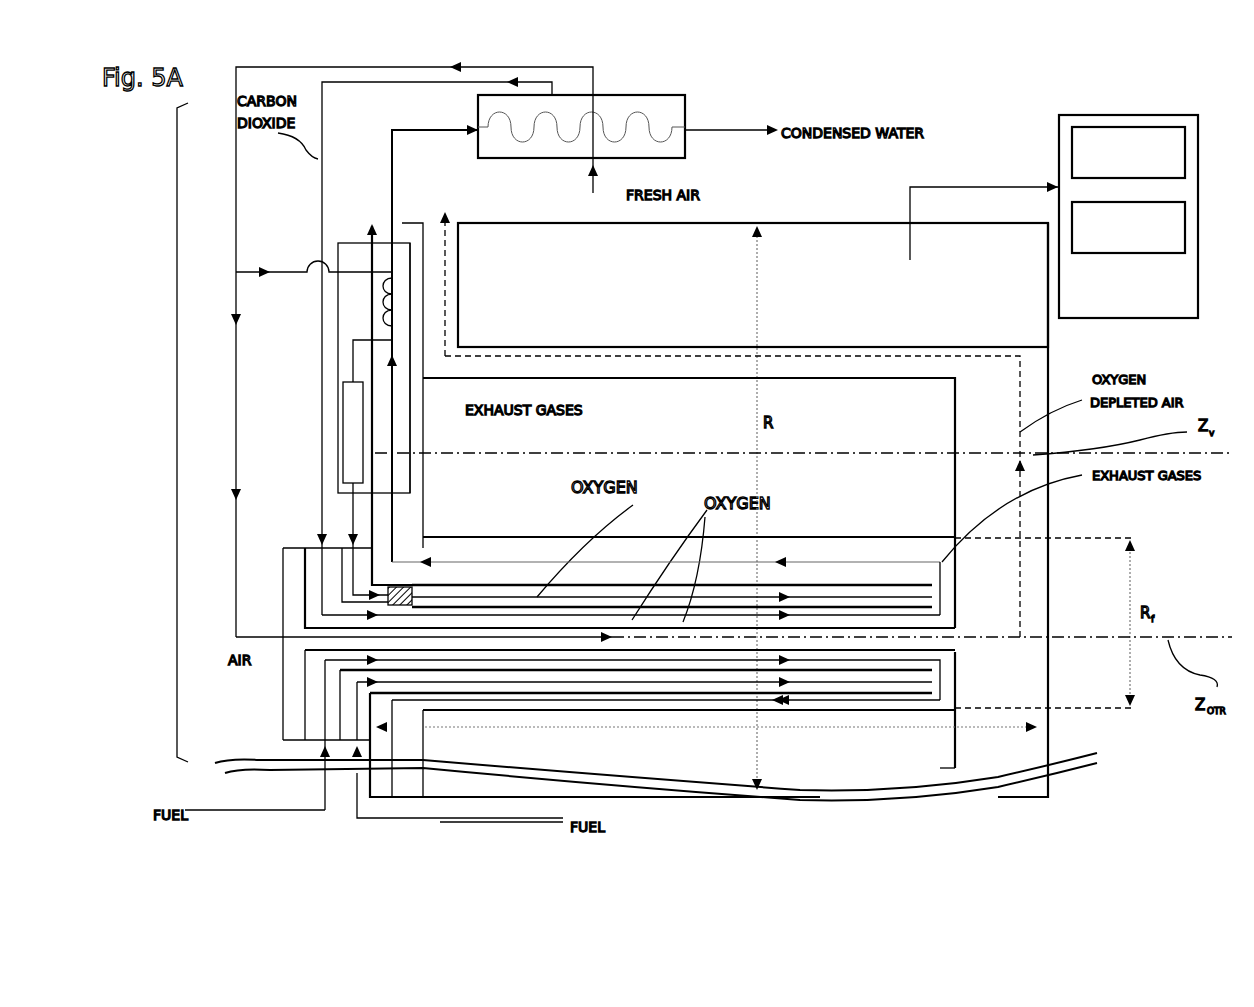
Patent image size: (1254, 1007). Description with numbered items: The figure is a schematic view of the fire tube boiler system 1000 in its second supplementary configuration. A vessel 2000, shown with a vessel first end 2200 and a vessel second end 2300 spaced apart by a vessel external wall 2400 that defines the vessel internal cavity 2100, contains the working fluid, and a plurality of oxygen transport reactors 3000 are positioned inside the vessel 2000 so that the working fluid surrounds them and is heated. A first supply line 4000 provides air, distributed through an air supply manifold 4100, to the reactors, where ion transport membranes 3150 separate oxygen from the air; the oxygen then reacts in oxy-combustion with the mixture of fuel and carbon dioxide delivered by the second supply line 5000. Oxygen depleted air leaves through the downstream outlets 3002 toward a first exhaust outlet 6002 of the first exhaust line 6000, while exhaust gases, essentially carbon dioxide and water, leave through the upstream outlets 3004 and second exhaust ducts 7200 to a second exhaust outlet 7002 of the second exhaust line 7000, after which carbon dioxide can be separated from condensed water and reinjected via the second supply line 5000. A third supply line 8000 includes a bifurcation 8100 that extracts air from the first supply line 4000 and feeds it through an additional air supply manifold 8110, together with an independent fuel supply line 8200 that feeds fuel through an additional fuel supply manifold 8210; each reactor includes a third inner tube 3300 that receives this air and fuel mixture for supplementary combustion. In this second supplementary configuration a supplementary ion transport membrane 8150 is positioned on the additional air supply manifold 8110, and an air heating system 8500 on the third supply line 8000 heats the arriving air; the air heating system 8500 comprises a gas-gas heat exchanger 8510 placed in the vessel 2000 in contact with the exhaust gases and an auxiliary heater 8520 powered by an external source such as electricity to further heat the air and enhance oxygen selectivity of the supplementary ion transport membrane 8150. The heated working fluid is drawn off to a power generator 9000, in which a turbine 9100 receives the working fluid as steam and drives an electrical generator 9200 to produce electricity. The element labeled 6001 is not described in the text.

The fire tube boiler system 1000 is at (177, 437).
The vessel 2000 is at (1092, 733).
The vessel internal cavity 2100 is at (803, 443).
The vessel first end 2200 is at (377, 740).
The vessel second end 2300 is at (1050, 742).
The vessel external wall 2400 is at (788, 798).
The oxygen transport reactors 3000 is at (675, 497).
The downstream outlets 3002 is at (970, 632).
The upstream outlets 3004 is at (436, 548).
The ion transport membranes 3150 is at (868, 628).
The third inner tube 3300 is at (793, 583).
The first supply line 4000 is at (236, 405).
The air supply manifold 4100 is at (320, 537).
The second supply line 5000 is at (322, 372).
The first exhaust line 6000 is at (445, 206).
The working fluid heat exchanger 6001 is at (648, 333).
The first exhaust outlet 6002 is at (423, 223).
The second exhaust line 7000 is at (392, 172).
The second exhaust outlet 7002 is at (370, 222).
The second exhaust ducts 7200 is at (430, 538).
The third supply line 8000 is at (318, 268).
The bifurcation 8100 is at (236, 272).
The additional air supply manifold 8110 is at (352, 535).
The supplementary ion transport membrane 8150 is at (418, 586).
The independent fuel supply line 8200 is at (357, 800).
The additional fuel supply manifold 8210 is at (283, 742).
The air heating system 8500 is at (412, 283).
The gas-gas heat exchanger 8510 is at (386, 327).
The auxiliary heater 8520 is at (372, 410).
The power generator 9000 is at (1133, 320).
The turbine 9100 is at (1085, 202).
The electrical generator 9200 is at (1132, 127).